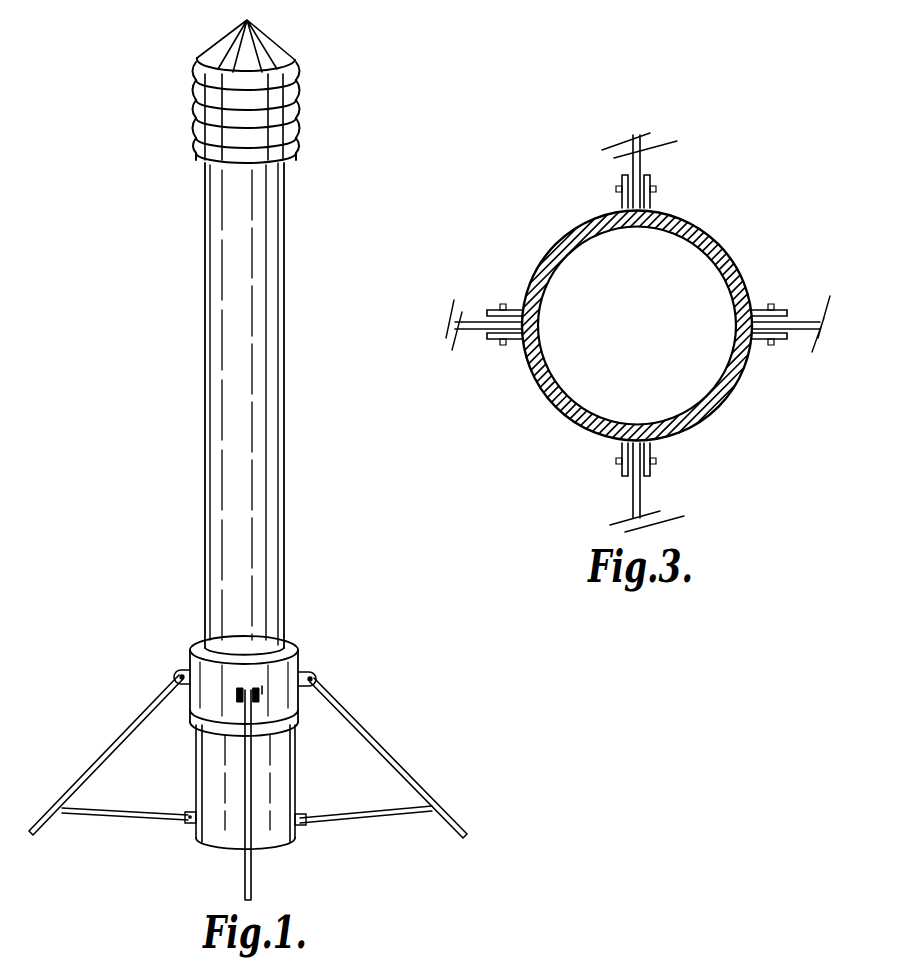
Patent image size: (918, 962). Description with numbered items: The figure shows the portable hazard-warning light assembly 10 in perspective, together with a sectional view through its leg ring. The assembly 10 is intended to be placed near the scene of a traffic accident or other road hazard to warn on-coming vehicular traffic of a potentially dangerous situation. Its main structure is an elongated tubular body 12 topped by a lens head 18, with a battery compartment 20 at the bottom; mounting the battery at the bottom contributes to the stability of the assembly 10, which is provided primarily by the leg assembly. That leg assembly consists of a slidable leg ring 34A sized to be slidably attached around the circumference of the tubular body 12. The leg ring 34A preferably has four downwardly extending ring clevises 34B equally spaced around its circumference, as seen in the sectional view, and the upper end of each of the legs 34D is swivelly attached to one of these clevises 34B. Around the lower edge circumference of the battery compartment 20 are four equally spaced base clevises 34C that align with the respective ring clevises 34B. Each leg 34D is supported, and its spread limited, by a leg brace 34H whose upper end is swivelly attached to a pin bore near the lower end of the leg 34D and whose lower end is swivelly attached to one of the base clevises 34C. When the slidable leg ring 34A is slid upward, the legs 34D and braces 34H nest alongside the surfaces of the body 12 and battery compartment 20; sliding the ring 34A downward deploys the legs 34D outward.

In FIG. 1, the portable hazard-warning light assembly 10 is at (140, 90).
In FIG. 1, the elongated tubular body 12 is at (237, 360).
In FIG. 1, the lens head 18 is at (290, 106).
In FIG. 1, the battery compartment 20 is at (262, 776).
In FIG. 1, the slidable leg ring 34A is at (290, 660).
In FIG. 3, the slidable leg ring 34A is at (700, 410).
In FIG. 1, the ring clevises 34B is at (172, 677).
In FIG. 3, the ring clevises 34B is at (652, 202).
In FIG. 1, the base clevises 34C is at (192, 826).
In FIG. 1, the legs 34D is at (112, 752).
In FIG. 3, the legs 34D is at (650, 158).
In FIG. 1, the leg brace 34H is at (126, 828).